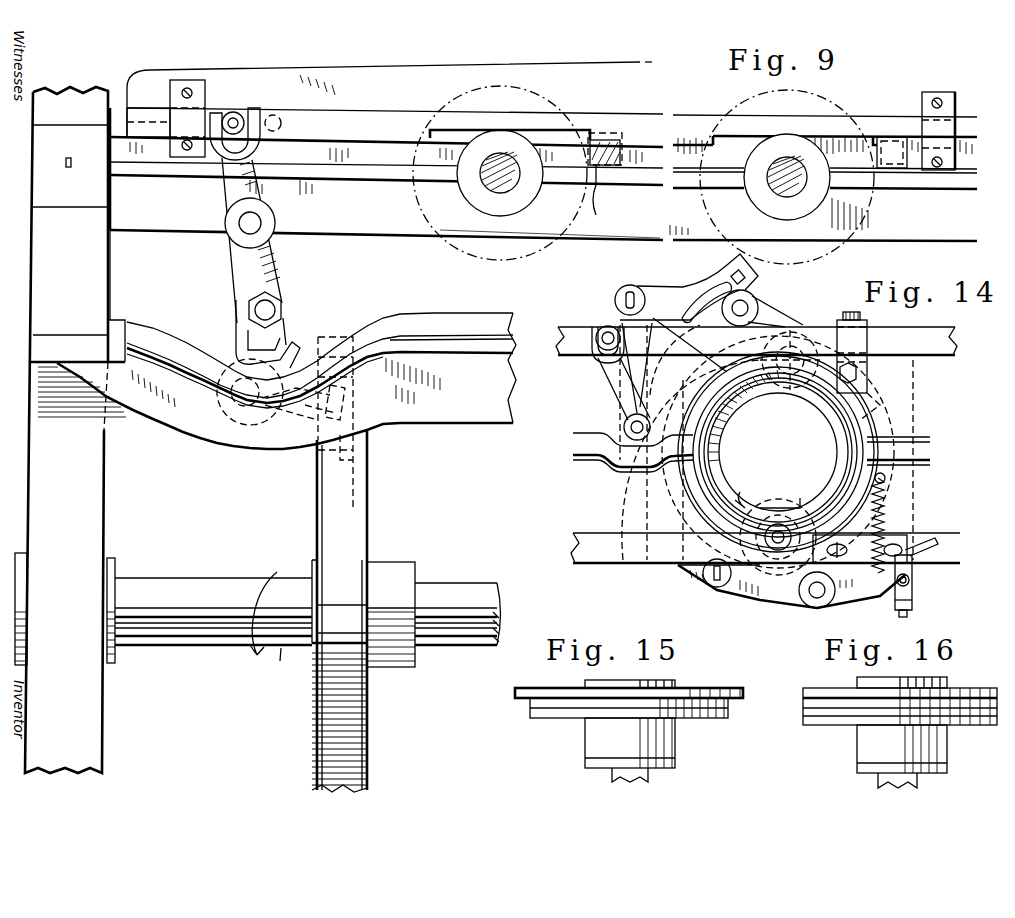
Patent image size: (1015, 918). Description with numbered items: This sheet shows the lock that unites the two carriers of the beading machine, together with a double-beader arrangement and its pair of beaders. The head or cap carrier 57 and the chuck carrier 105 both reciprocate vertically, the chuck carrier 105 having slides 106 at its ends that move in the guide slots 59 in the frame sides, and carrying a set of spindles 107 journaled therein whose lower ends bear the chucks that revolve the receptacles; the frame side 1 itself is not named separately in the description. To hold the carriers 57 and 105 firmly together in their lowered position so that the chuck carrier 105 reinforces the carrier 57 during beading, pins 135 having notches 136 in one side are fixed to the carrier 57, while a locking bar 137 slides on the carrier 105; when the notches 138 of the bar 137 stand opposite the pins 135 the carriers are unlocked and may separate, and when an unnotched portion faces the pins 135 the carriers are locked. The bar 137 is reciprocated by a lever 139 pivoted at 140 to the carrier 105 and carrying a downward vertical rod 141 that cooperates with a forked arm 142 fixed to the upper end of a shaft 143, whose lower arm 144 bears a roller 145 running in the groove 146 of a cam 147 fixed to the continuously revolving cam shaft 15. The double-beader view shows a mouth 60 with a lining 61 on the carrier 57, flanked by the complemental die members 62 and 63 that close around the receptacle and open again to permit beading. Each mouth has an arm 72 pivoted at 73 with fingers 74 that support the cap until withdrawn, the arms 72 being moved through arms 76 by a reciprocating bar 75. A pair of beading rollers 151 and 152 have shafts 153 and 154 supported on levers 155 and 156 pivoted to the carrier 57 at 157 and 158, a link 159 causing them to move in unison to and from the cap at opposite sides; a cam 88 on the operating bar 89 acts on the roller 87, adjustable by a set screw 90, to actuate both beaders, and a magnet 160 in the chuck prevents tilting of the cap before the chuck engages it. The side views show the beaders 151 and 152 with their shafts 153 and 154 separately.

In FIG. 9, the post 1 is at (37, 262).
In FIG. 9, the slots 59 is at (52, 207).
In FIG. 9, the slides 106 is at (42, 190).
In FIG. 9, the locking bar 137 is at (372, 118).
In FIG. 9, the notches 138 is at (540, 128).
In FIG. 9, the pins 135 is at (605, 165).
In FIG. 9, the notches 136 is at (598, 168).
In FIG. 9, the spindles 107 is at (487, 186).
In FIG. 9, the chuck carrier 105 is at (620, 228).
In FIG. 9, the lever 139 is at (225, 200).
In FIG. 9, the pivot 140 is at (250, 228).
In FIG. 9, the vertical rod 141 is at (280, 300).
In FIG. 9, the forked arm 142 is at (293, 332).
In FIG. 9, the shaft 143 is at (238, 398).
In FIG. 9, the arm 144 is at (280, 418).
In FIG. 9, the roller or projection 145 is at (312, 430).
In FIG. 9, the groove or track 146 is at (343, 462).
In FIG. 9, the cam 147 is at (355, 540).
In FIG. 9, the cam shaft 15 is at (476, 592).
In FIG. 14, the reciprocating bar 75 is at (575, 327).
In FIG. 14, the carrier 57 is at (918, 452).
In FIG. 14, the operating bar 89 is at (628, 552).
In FIG. 14, the arm 72 is at (717, 288).
In FIG. 14, the pivot 158 is at (752, 303).
In FIG. 14, the fingers 74 is at (768, 312).
In FIG. 14, the lever 156 is at (795, 333).
In FIG. 14, the shaft 154 is at (822, 335).
In FIG. 16, the shaft 154 is at (875, 782).
In FIG. 14, the arms 76 is at (612, 384).
In FIG. 14, the pivot 73 is at (624, 427).
In FIG. 14, the lining 61 is at (838, 420).
In FIG. 14, the mouths 60 is at (870, 425).
In FIG. 14, the beading roller 152 is at (770, 393).
In FIG. 16, the beading roller 152 is at (825, 725).
In FIG. 14, the die member 62 is at (725, 490).
In FIG. 14, the beading roller 151 is at (780, 504).
In FIG. 15, the beading roller 151 is at (733, 686).
In FIG. 14, the link 159 is at (625, 495).
In FIG. 14, the die member 63 is at (888, 480).
In FIG. 14, the magnets 160 is at (882, 526).
In FIG. 14, the cam 88 is at (910, 548).
In FIG. 14, the roller or projection 87 is at (905, 595).
In FIG. 14, the set screws 90 is at (905, 614).
In FIG. 14, the shaft 153 is at (775, 552).
In FIG. 15, the shaft 153 is at (650, 776).
In FIG. 14, the lever 155 is at (787, 600).
In FIG. 14, the pivot 157 is at (818, 600).